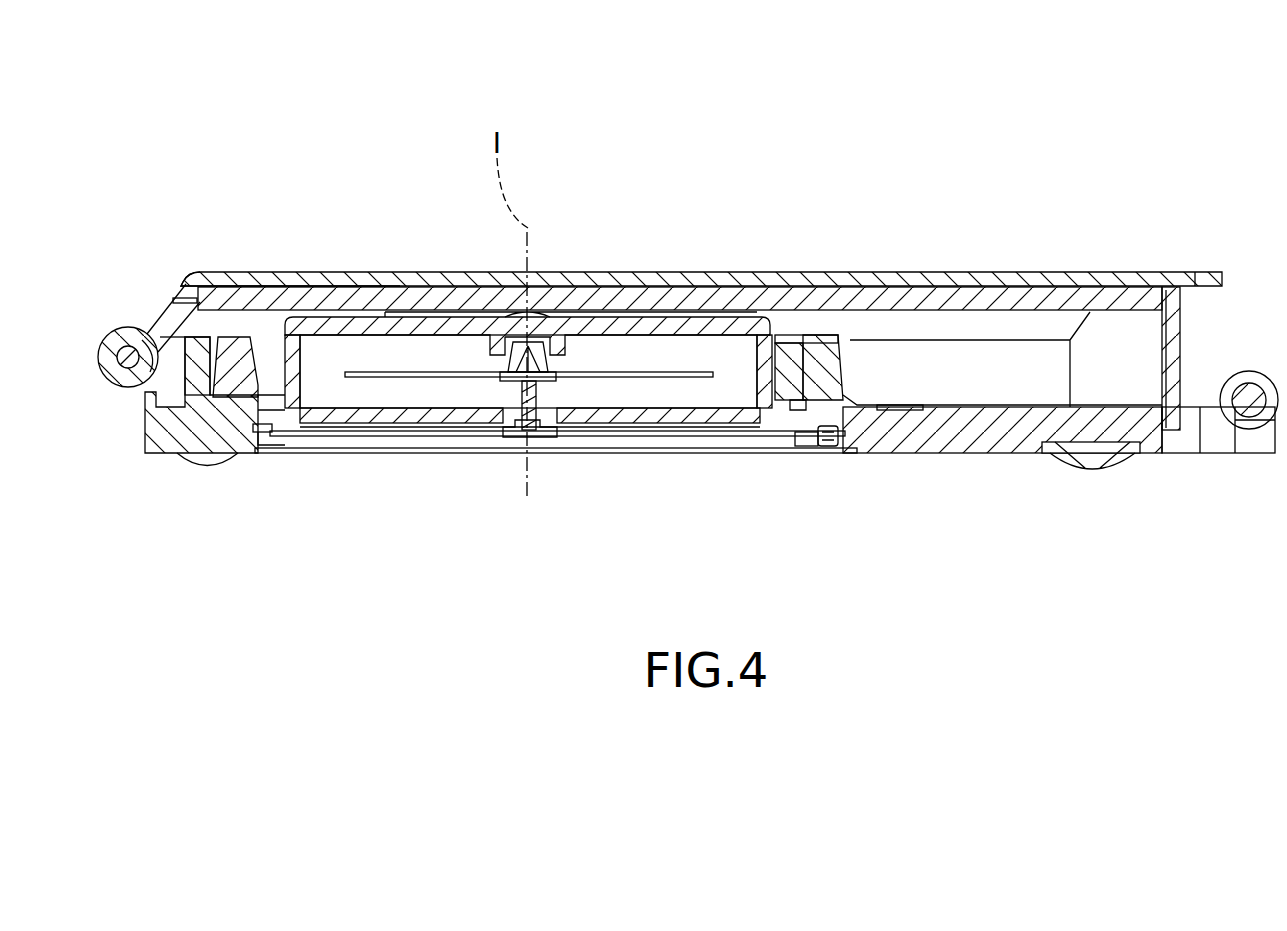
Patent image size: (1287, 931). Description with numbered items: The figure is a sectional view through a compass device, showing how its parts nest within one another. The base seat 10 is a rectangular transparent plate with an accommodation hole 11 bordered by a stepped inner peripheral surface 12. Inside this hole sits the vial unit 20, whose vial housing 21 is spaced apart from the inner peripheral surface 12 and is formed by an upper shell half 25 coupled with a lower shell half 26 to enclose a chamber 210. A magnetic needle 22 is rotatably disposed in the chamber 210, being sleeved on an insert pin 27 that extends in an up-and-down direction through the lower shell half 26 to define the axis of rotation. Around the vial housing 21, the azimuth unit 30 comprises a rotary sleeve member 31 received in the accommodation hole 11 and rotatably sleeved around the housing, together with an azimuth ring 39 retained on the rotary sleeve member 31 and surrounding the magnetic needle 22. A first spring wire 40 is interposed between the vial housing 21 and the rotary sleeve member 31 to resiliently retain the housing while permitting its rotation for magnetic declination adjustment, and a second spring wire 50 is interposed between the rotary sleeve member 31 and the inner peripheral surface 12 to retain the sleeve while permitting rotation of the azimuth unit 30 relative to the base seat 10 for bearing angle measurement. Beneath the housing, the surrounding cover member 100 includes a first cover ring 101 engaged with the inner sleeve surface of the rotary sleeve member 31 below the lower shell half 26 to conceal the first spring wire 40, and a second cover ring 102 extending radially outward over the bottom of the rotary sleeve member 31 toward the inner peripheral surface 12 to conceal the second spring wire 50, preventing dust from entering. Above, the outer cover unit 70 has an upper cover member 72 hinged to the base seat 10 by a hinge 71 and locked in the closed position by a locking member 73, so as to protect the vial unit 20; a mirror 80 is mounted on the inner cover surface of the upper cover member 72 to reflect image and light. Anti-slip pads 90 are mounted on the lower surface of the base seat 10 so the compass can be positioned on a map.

The base seat 10 is at (971, 455).
The accommodation hole 11 is at (578, 453).
The inner peripheral surface 12 is at (848, 453).
The vial unit 20 is at (707, 313).
The vial housing 21 is at (724, 313).
The enclosed chamber 210 is at (636, 345).
The magnetic needle 22 is at (368, 378).
The upper shell half 25 is at (748, 325).
The lower shell half 26 is at (725, 420).
The insert pin 27 is at (522, 392).
The azimuth unit 30 is at (834, 330).
The rotary sleeve member 31 is at (852, 357).
The azimuth ring 39 is at (798, 337).
The first spring wire 40 is at (797, 408).
The second spring wire 50 is at (828, 446).
The outer cover unit 70 is at (323, 272).
The hinge 71 is at (130, 378).
The upper cover member 72 is at (272, 278).
The locking member 73 is at (1165, 430).
The mirror 80 is at (371, 296).
The anti-slip pads 90 is at (190, 458).
The surrounding cover member 100 is at (253, 455).
The first cover ring 101 is at (262, 443).
The second cover ring 102 is at (230, 452).